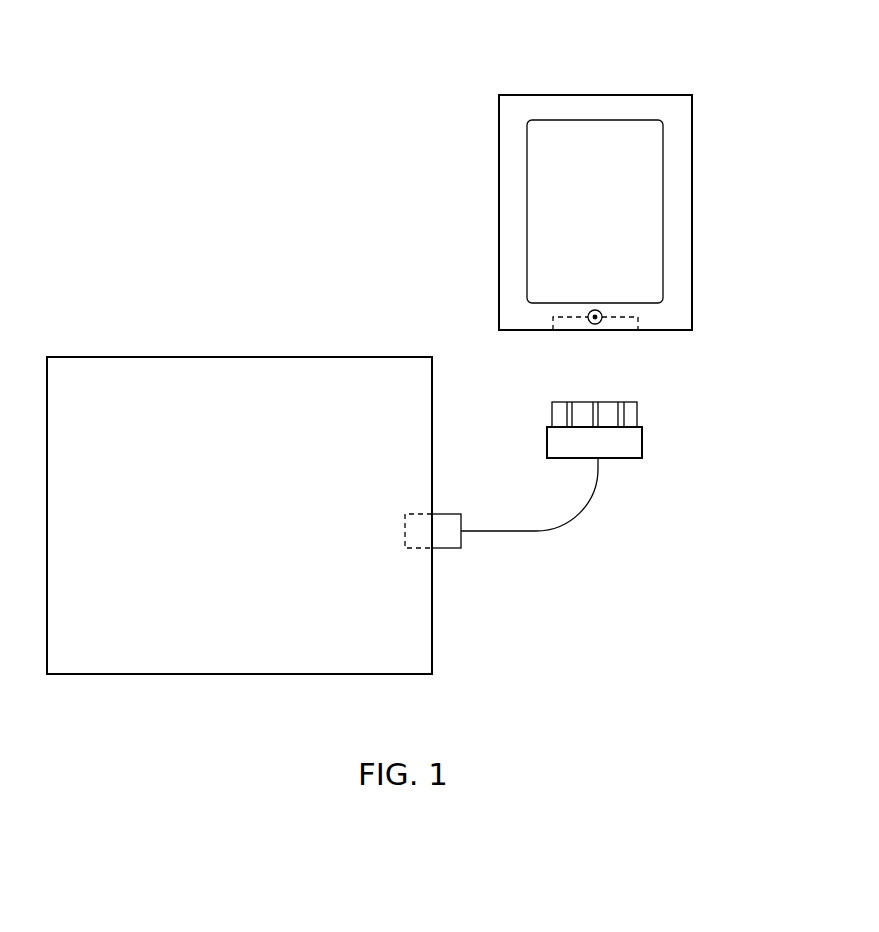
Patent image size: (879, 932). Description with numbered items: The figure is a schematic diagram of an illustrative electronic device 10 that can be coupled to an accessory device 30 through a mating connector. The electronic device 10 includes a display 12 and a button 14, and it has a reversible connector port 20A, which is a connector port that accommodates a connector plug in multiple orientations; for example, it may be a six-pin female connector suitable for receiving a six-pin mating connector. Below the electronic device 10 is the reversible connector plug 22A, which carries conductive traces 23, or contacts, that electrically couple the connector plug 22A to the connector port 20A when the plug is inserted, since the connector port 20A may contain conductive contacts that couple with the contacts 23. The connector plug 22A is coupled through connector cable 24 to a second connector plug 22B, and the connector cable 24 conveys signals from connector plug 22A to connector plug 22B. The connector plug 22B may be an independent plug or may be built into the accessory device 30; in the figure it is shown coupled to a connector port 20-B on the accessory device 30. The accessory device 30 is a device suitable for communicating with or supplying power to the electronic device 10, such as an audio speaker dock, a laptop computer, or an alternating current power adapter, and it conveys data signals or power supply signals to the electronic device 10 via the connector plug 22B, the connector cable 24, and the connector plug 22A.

The electronic device 10 is at (648, 94).
The display 12 is at (663, 143).
The button 14 is at (592, 310).
The reversible connector port 20A is at (638, 320).
The reversible connector plug 22A is at (642, 441).
The conductive traces 23 is at (622, 402).
The connector cable 24 is at (571, 518).
The accessory device 30 is at (88, 357).
The connector port 20-B is at (415, 514).
The connector plug 22B is at (445, 514).